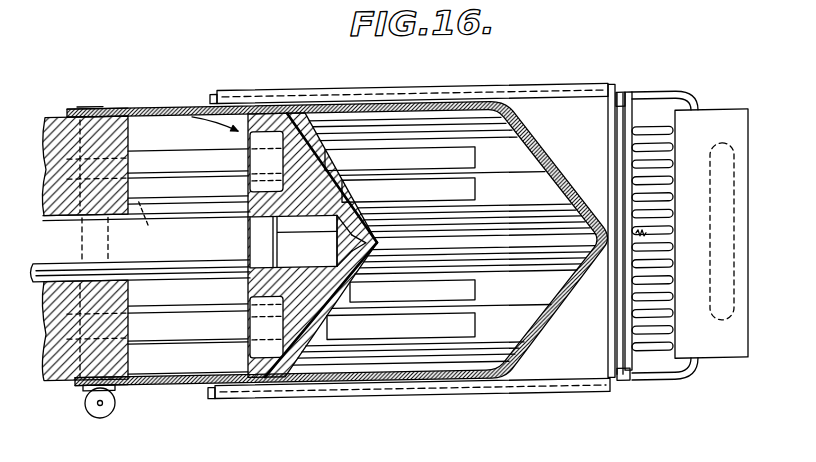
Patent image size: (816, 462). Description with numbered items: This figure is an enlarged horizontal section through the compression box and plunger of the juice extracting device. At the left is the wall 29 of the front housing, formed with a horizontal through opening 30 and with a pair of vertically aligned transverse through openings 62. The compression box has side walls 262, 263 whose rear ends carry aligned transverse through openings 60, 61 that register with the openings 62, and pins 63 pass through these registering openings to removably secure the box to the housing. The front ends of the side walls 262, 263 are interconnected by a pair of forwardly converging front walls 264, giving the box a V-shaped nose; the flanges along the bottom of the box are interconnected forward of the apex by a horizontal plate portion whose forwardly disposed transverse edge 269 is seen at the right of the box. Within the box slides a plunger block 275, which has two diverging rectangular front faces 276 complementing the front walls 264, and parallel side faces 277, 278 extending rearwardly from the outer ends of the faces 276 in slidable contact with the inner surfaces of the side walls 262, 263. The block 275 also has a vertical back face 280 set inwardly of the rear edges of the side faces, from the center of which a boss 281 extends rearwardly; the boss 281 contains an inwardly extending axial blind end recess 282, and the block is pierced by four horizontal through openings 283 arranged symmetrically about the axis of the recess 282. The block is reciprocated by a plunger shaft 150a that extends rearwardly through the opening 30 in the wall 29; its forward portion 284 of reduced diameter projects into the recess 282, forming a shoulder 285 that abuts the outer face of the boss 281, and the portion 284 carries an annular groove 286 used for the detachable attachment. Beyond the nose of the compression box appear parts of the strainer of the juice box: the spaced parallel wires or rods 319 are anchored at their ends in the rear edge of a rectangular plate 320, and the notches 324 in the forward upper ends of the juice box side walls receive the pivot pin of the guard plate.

The wall 29 is at (71, 128).
The horizontal through opening 30 is at (72, 252).
The transverse through opening 60 is at (72, 383).
The transverse through opening 61 is at (110, 105).
The transverse through opening 62 is at (62, 379).
The pin 63 is at (153, 225).
The plunger shaft 150a is at (193, 245).
The side wall 262 is at (370, 384).
The side wall 263 is at (472, 106).
The front wall 264 is at (573, 145).
The transverse edge 269 is at (613, 96).
The plunger block 275 is at (192, 106).
The front face 276 is at (322, 147).
The side face 277 is at (272, 376).
The side face 278 is at (283, 113).
The back face 280 is at (248, 287).
The boss 281 is at (247, 187).
The axial blind end recess 282 is at (327, 250).
The through opening 283 is at (248, 344).
The forward portion 284 is at (328, 250).
The shoulder 285 is at (250, 257).
The annular groove 286 is at (348, 206).
The wires or rods 319 is at (643, 133).
The rectangular plate 320 is at (712, 134).
The notch 324 is at (620, 93).